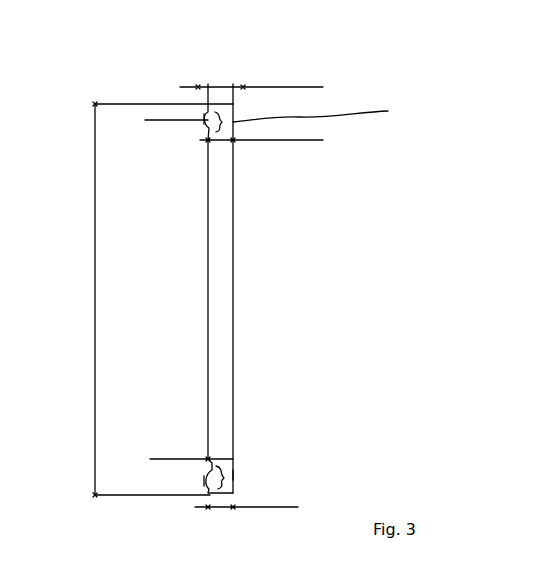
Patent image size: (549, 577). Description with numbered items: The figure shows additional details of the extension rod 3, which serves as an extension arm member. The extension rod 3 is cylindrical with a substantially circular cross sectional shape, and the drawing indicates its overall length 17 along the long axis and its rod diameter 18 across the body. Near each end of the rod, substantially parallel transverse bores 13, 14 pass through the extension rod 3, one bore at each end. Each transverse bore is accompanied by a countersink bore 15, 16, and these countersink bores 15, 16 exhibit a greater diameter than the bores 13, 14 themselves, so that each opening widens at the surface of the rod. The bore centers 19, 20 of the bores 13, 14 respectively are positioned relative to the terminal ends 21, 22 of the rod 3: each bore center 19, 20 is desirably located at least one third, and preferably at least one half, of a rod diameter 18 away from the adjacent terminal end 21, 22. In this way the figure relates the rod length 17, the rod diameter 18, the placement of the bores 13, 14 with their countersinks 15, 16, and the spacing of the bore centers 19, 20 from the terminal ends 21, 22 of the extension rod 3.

The extension rod 3 is at (233, 266).
The transverse bore 13 is at (264, 122).
The transverse bore 14 is at (233, 476).
The countersink bore 15 is at (207, 122).
The countersink bore 16 is at (207, 486).
The length 17 is at (93, 305).
The rod diameter 18 is at (176, 452).
The bore center 19 is at (220, 87).
The bore center 20 is at (235, 478).
The terminal end 21 is at (211, 103).
The terminal end 22 is at (228, 495).